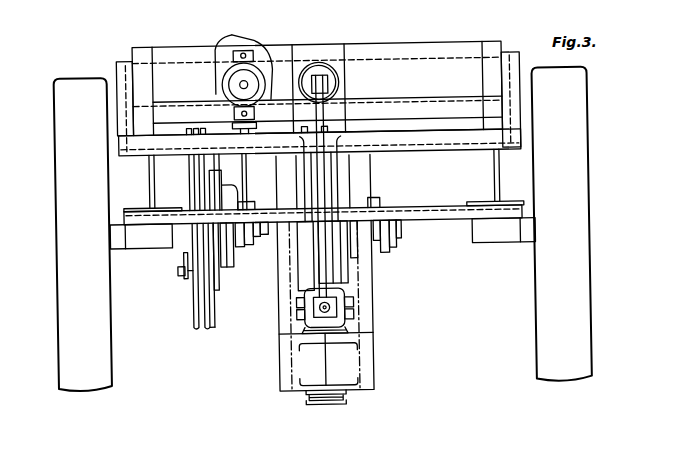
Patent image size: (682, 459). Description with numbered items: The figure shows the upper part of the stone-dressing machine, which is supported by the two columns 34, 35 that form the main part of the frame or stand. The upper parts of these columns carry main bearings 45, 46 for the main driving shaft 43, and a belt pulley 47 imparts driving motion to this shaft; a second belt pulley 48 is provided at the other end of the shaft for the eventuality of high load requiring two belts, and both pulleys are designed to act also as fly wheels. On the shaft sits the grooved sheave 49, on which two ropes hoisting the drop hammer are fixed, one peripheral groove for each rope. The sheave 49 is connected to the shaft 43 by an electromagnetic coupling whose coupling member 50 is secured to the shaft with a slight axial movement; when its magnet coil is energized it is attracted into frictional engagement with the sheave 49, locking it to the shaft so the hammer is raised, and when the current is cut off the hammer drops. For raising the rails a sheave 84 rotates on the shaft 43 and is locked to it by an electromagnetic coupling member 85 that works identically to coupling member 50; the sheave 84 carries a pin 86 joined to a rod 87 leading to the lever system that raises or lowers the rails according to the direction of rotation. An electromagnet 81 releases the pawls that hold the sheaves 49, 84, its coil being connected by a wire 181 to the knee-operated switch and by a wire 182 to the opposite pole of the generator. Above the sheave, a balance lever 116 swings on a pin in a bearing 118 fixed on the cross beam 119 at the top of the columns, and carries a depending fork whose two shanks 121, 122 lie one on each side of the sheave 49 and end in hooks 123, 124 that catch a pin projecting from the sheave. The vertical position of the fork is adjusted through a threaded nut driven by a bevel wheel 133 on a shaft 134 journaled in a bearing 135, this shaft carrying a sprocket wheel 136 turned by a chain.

The column 34 is at (496, 182).
The column 35 is at (154, 179).
The main driving shaft 43 is at (437, 229).
The main bearing 45 is at (496, 235).
The main bearing 46 is at (139, 236).
The belt pulley 47 is at (580, 117).
The belt pulley 48 is at (63, 121).
The grooved sheave 49 is at (336, 278).
The coupling member 50 is at (354, 254).
The electromagnet 81 is at (227, 82).
The sheave 84 is at (198, 302).
The electromagnetic coupling member 85 is at (229, 263).
The pin 86 is at (179, 269).
The rod 87 is at (181, 259).
The balance lever 116 is at (326, 110).
The bearing 118 is at (333, 172).
The cross beam 119 is at (414, 151).
The shank 121 is at (352, 304).
The shank 122 is at (298, 300).
The hook 123 is at (350, 317).
The hook 124 is at (298, 316).
The bevel wheel 133 is at (347, 334).
The shaft 134 is at (330, 376).
The bearing 135 is at (300, 362).
The sprocket wheel 136 is at (310, 400).
The wire 181 is at (218, 46).
The wire 182 is at (252, 37).